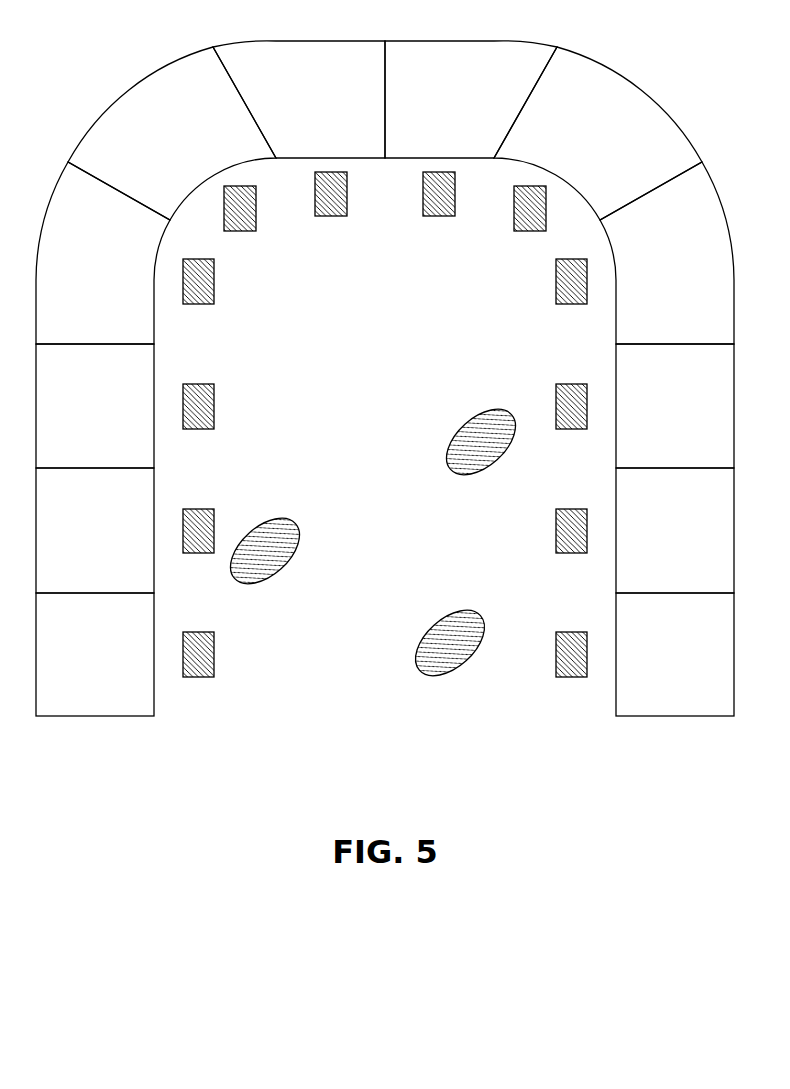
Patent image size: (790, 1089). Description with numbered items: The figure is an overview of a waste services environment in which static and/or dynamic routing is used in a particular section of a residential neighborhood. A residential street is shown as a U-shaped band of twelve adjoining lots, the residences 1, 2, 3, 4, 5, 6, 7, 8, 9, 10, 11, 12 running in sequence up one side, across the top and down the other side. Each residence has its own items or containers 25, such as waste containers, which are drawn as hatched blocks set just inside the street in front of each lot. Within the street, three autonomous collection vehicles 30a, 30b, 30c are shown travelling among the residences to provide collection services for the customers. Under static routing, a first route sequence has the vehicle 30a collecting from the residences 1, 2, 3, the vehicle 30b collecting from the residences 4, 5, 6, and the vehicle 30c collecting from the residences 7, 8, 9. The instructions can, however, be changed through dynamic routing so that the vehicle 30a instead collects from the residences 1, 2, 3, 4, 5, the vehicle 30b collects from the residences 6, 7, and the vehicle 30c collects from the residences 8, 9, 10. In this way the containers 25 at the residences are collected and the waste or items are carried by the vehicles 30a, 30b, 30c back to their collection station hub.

The residence 1 is at (95, 654).
The residence 2 is at (95, 530).
The residence 3 is at (95, 406).
The residence 4 is at (103, 253).
The residence 5 is at (172, 133).
The residence 6 is at (299, 99).
The residence 7 is at (471, 99).
The residence 8 is at (598, 133).
The residence 9 is at (667, 253).
The residence 10 is at (675, 406).
The residence 11 is at (675, 530).
The residence 12 is at (675, 654).
The items or containers 25 is at (197, 685).
The autonomous collection vehicle 30a is at (263, 590).
The autonomous collection vehicle 30b is at (455, 432).
The autonomous collection vehicle 30c is at (462, 685).